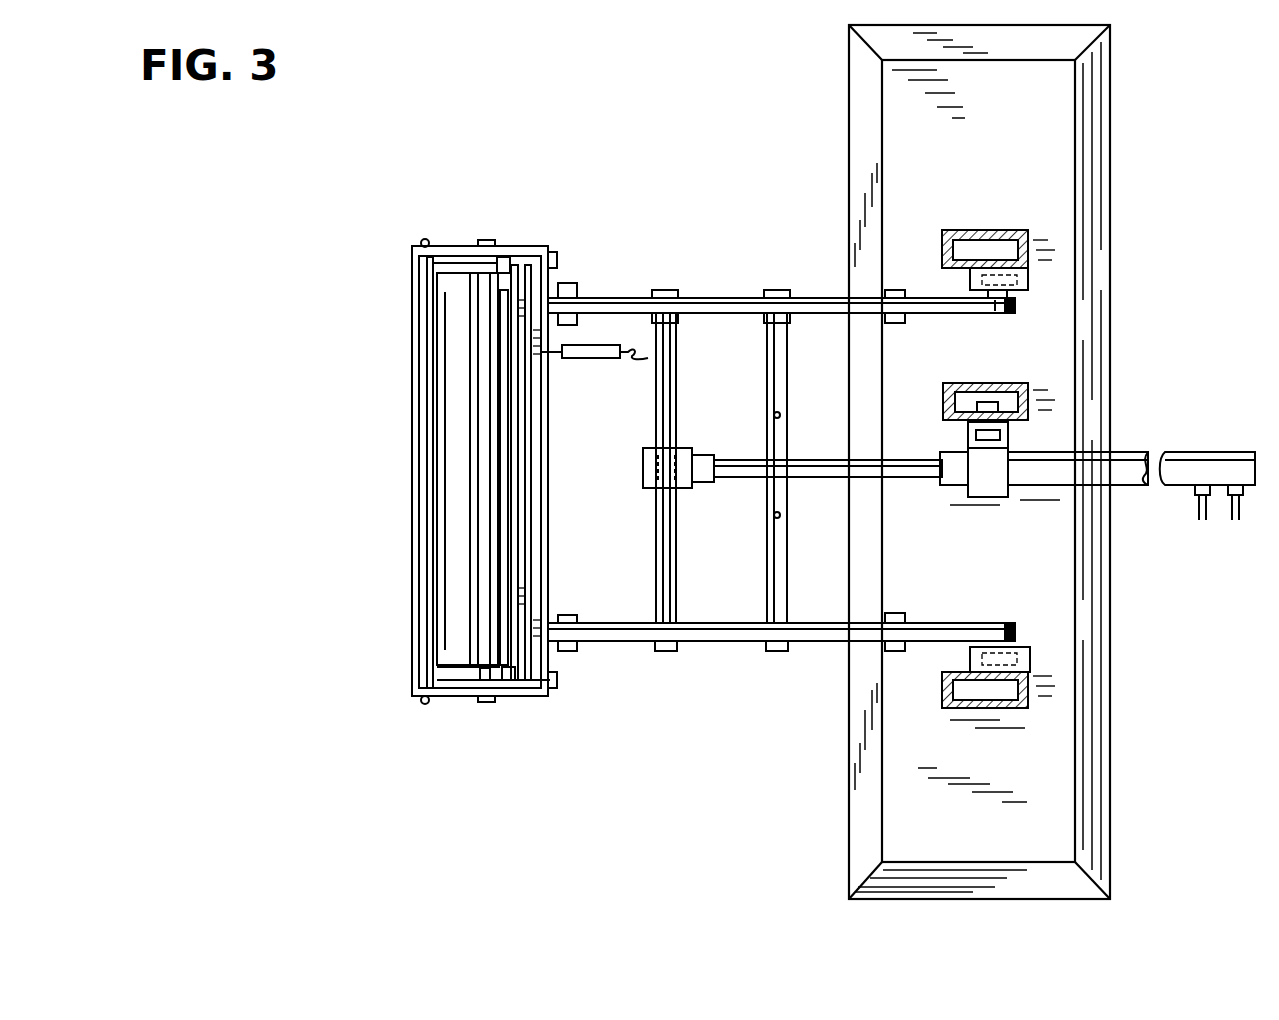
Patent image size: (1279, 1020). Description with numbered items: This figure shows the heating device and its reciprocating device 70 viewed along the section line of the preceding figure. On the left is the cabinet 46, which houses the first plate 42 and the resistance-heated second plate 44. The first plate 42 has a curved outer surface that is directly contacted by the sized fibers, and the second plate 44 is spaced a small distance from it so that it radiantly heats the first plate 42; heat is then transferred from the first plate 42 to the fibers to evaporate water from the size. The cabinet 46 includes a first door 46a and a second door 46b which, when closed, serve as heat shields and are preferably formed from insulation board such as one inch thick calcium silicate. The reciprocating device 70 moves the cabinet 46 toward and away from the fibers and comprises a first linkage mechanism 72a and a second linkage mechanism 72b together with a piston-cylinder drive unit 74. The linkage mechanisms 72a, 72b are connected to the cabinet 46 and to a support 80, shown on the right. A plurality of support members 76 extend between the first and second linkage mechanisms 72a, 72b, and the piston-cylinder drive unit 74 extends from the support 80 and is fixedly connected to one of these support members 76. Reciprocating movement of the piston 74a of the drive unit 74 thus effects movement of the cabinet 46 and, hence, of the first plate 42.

The first plate 42 is at (460, 652).
The second plate 44 is at (512, 398).
The cabinet 46 is at (471, 511).
The first door 46a is at (410, 592).
The second door 46b is at (412, 368).
The reciprocating device 70 is at (730, 250).
The first linkage mechanism 72a is at (626, 643).
The second linkage mechanism 72b is at (624, 300).
The piston-cylinder drive unit 74 is at (1125, 455).
The piston 74a is at (800, 458).
The support member 76 is at (770, 578).
The support 80 is at (1095, 680).